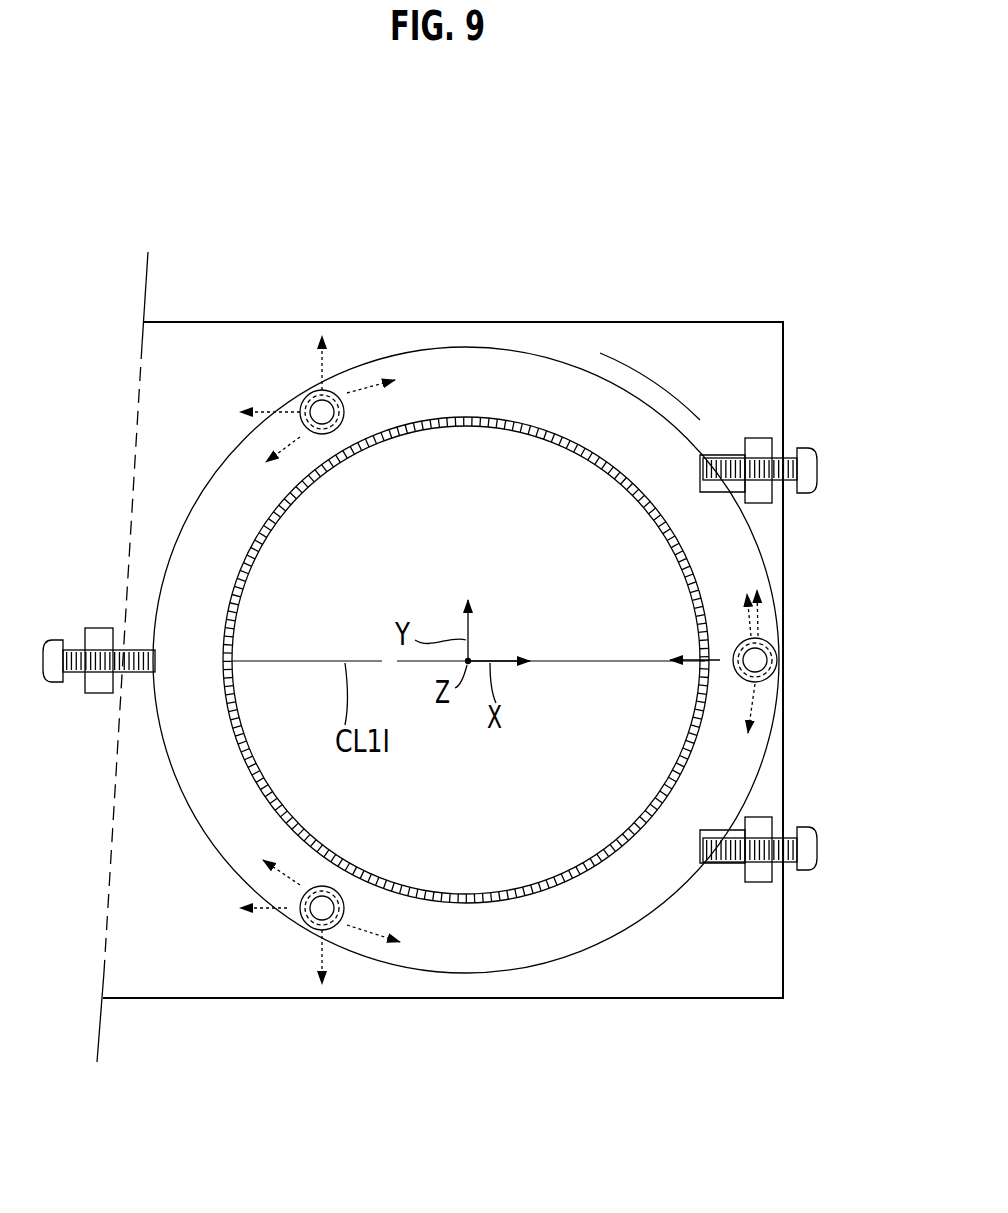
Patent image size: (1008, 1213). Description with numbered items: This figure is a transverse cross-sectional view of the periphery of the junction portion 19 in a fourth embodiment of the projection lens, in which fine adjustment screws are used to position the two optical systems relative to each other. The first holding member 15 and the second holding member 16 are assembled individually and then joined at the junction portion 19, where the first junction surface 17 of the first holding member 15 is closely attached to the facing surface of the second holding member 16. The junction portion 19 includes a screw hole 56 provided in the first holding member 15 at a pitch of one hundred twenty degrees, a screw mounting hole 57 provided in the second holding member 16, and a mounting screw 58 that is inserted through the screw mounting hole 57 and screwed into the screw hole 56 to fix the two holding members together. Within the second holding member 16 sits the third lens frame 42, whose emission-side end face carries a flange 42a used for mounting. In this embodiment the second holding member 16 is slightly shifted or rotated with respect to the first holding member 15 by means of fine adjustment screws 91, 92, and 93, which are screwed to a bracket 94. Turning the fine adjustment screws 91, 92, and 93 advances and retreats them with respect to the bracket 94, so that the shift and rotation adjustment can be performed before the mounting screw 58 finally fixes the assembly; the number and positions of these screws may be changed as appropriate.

The first holding member 15 is at (713, 322).
The second holding member 16 is at (613, 378).
The first junction surface 17 is at (255, 362).
The junction portion 19 is at (800, 580).
The third lens frame 42 is at (248, 558).
The flange 42a is at (510, 345).
The screw hole 56 is at (336, 434).
The screw mounting hole 57 is at (322, 390).
The mounting screw 58 is at (340, 396).
The fine adjustment screw 91 is at (805, 465).
The fine adjustment screw 92 is at (808, 862).
The fine adjustment screw 93 is at (55, 640).
The bracket 94 is at (750, 455).